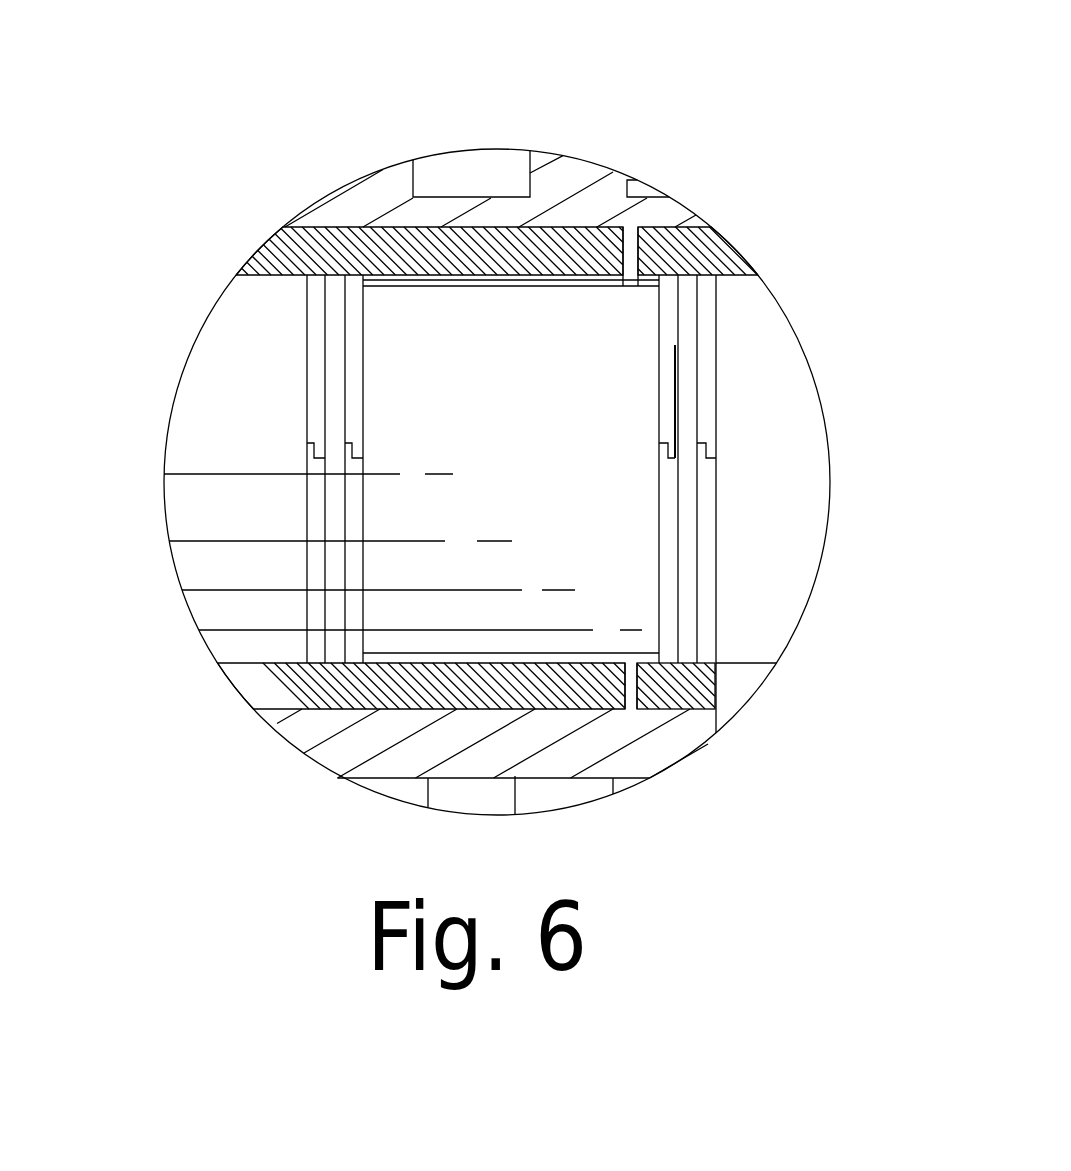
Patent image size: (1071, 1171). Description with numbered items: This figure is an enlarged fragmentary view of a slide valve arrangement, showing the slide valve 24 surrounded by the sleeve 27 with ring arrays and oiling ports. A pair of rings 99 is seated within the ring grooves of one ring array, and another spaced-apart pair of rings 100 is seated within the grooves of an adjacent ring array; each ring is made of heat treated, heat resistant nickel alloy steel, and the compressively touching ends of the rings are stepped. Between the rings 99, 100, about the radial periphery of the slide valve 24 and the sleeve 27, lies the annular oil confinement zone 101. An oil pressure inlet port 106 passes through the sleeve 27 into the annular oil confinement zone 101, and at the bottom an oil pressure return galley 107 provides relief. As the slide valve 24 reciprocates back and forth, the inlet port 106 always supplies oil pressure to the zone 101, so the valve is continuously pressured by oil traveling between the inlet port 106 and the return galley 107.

The slide valve 24 is at (765, 412).
The sleeve 27 is at (745, 246).
The rings 99 is at (378, 416).
The rings 100 is at (688, 408).
The annular oil confinement zone 101 is at (570, 305).
The oil pressure inlet port 106 is at (655, 230).
The oil pressure return galley 107 is at (655, 707).